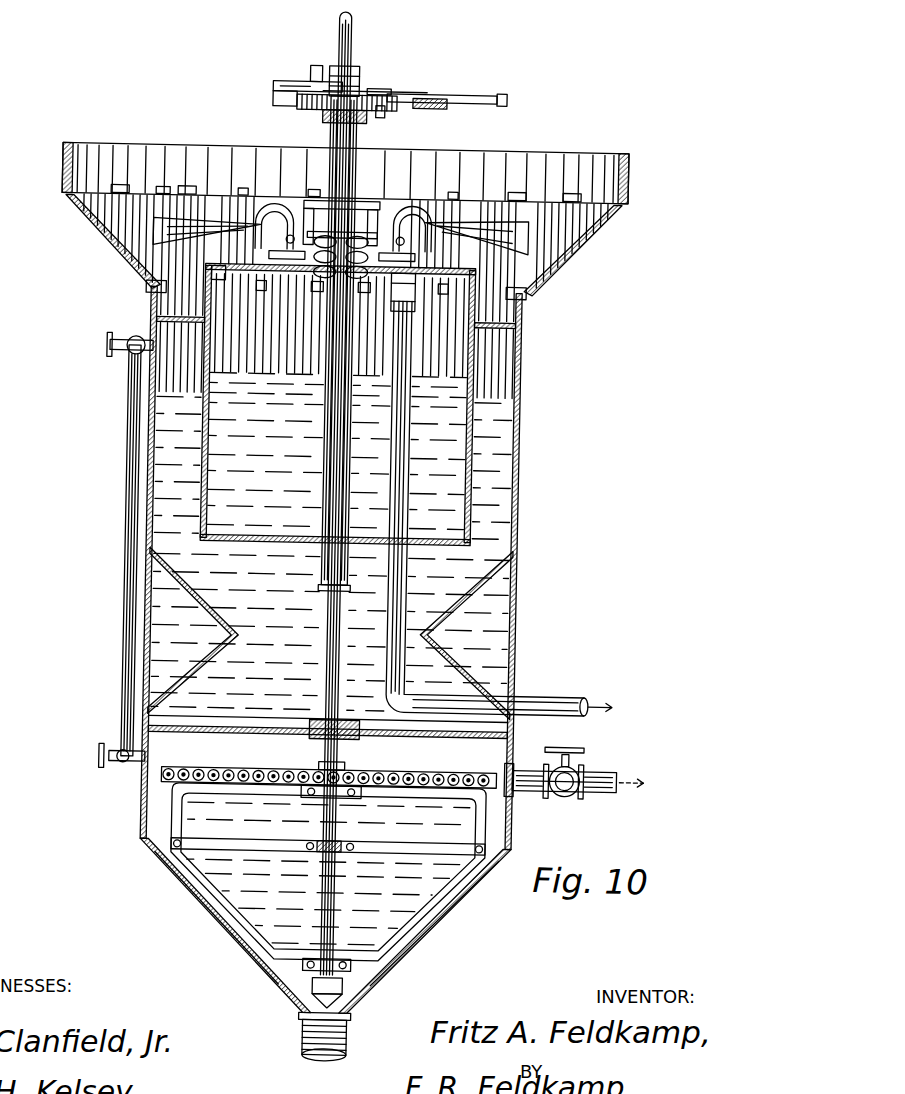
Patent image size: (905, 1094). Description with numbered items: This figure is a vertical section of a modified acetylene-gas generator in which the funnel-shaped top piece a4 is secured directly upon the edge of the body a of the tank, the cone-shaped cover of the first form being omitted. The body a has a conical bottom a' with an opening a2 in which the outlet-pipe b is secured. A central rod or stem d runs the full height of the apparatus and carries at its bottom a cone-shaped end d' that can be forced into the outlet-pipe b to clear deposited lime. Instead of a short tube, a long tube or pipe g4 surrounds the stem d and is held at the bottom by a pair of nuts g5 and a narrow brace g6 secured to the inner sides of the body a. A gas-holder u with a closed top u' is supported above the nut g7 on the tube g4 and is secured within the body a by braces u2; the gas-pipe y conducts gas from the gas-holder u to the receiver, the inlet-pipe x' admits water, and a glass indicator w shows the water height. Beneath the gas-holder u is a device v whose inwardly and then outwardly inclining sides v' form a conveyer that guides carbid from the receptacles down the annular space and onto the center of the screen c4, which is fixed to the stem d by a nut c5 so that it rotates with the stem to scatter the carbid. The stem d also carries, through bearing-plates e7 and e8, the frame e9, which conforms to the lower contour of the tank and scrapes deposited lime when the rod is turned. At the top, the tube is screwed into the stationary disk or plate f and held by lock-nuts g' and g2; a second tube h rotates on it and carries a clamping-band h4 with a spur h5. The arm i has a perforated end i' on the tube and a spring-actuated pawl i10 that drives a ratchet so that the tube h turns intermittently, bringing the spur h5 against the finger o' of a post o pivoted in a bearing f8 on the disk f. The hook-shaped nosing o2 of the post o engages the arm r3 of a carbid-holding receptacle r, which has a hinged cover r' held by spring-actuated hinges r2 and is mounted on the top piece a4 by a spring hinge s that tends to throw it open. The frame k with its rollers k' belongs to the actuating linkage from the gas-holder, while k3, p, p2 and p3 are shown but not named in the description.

The body a is at (349, 651).
The conical bottom a' is at (325, 919).
The opening a2 is at (360, 1024).
The funnel-shaped top piece a4 is at (542, 160).
The outlet-pipe b is at (350, 1050).
The screen c4 is at (302, 772).
The nut c5 is at (352, 786).
The rod or stem d is at (352, 492).
The cone-shaped end d' is at (365, 994).
The bearing-plate e7 is at (322, 800).
The bearing-plate e8 is at (342, 962).
The frame e9 is at (226, 798).
The disk or plate f is at (409, 292).
The bearing f8 is at (354, 306).
The lock-nut g' is at (355, 241).
The lock-nut g2 is at (310, 294).
The long tube or pipe g4 is at (352, 70).
The nuts g5 is at (318, 722).
The narrow brace g6 is at (226, 736).
The nut g7 is at (360, 290).
The second tube or pipe h is at (355, 208).
The clamping-band h4 is at (358, 200).
The spur or foot h5 is at (302, 208).
The rod or arm i is at (447, 88).
The perforated end i' is at (375, 79).
The spring-actuated pawl or dog i10 is at (430, 106).
The frame k is at (347, 102).
The rollers k' is at (329, 124).
The key k3 is at (376, 114).
The arm or post o is at (336, 210).
The finger o' is at (341, 283).
The hook-shaped end or nosing o2 is at (256, 206).
The lever p is at (292, 86).
The lever pivot p2 is at (318, 74).
The lever block p3 is at (264, 98).
The carbid-holding receptacle r is at (339, 296).
The hinged cover r' is at (319, 181).
The spring-actuated hinge r2 is at (112, 193).
The arm r3 is at (341, 230).
The hinge s is at (90, 214).
The gas-holder u is at (338, 404).
The closed top u' is at (237, 286).
The braces u2 is at (188, 326).
The device / conveyer v is at (212, 631).
The inclining sides v' is at (353, 632).
The glass indicator w is at (124, 516).
The inlet-pipe x' is at (574, 771).
The gas-pipe y is at (407, 497).